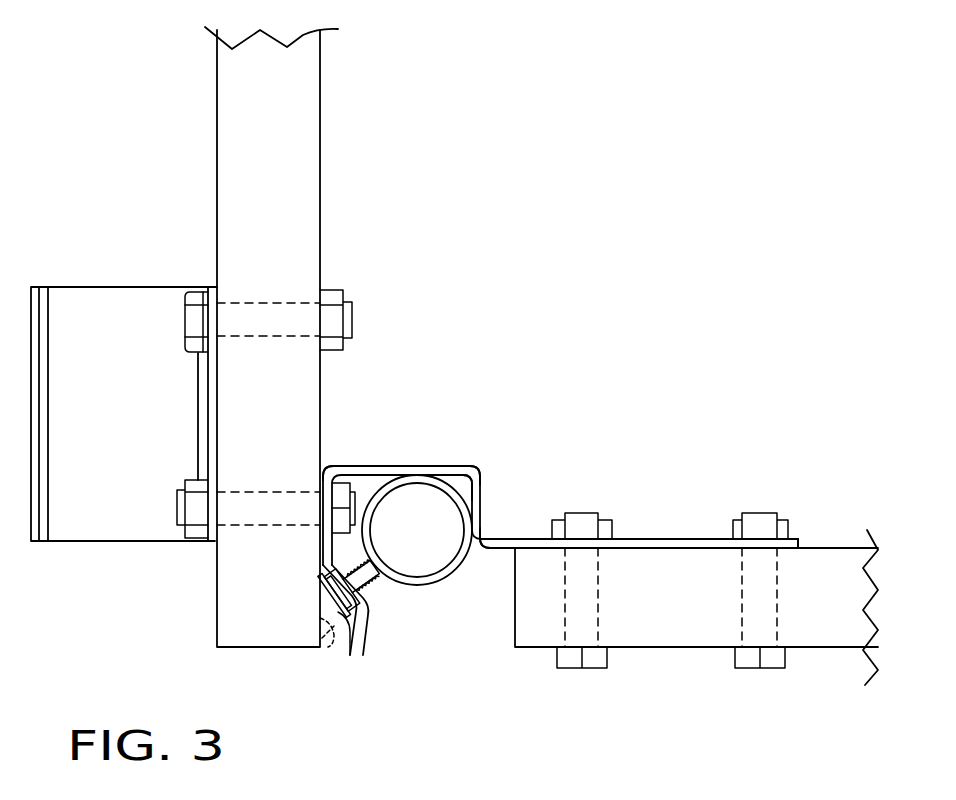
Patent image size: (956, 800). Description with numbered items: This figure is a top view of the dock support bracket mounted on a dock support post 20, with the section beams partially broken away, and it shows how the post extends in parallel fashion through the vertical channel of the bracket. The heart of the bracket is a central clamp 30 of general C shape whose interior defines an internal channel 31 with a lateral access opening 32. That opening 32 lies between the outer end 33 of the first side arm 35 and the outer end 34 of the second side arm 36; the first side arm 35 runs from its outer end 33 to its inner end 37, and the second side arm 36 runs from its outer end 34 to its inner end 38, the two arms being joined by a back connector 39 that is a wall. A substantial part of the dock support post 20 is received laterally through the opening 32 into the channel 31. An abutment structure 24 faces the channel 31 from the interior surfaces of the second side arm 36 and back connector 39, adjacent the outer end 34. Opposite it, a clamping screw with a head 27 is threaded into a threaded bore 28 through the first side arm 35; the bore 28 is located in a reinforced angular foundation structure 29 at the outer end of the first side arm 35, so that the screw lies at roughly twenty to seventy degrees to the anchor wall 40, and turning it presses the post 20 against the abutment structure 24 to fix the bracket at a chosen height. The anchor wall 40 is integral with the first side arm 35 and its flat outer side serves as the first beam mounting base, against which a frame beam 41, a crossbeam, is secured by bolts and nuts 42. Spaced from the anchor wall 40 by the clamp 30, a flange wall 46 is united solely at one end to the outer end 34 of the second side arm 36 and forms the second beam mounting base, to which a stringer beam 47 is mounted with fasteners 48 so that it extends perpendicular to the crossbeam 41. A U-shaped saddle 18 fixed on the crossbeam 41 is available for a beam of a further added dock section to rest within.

The saddle 18 is at (108, 317).
The dock support post 20 is at (392, 483).
The abutment structure 24 is at (420, 472).
The head 27 is at (330, 640).
The threaded bore 28 is at (352, 622).
The angular foundation structure 29 is at (323, 570).
The clamp 30 is at (448, 637).
The internal channel 31 is at (457, 480).
The lateral access opening 32 is at (443, 590).
The outer end of first side arm 33 is at (365, 608).
The outer end of second side arm 34 is at (481, 556).
The first side arm 35 is at (305, 556).
The second side arm 36 is at (490, 503).
The inner end of first side arm 37 is at (323, 467).
The inner end of second side arm 38 is at (478, 477).
The back connector 39 is at (372, 467).
The anchor wall 40 is at (318, 505).
The frame beam 41 is at (302, 200).
The bolts and nuts 42 is at (197, 510).
The flange wall 46 is at (670, 543).
The stringer beam 47 is at (810, 628).
The bolt 48 is at (765, 530).